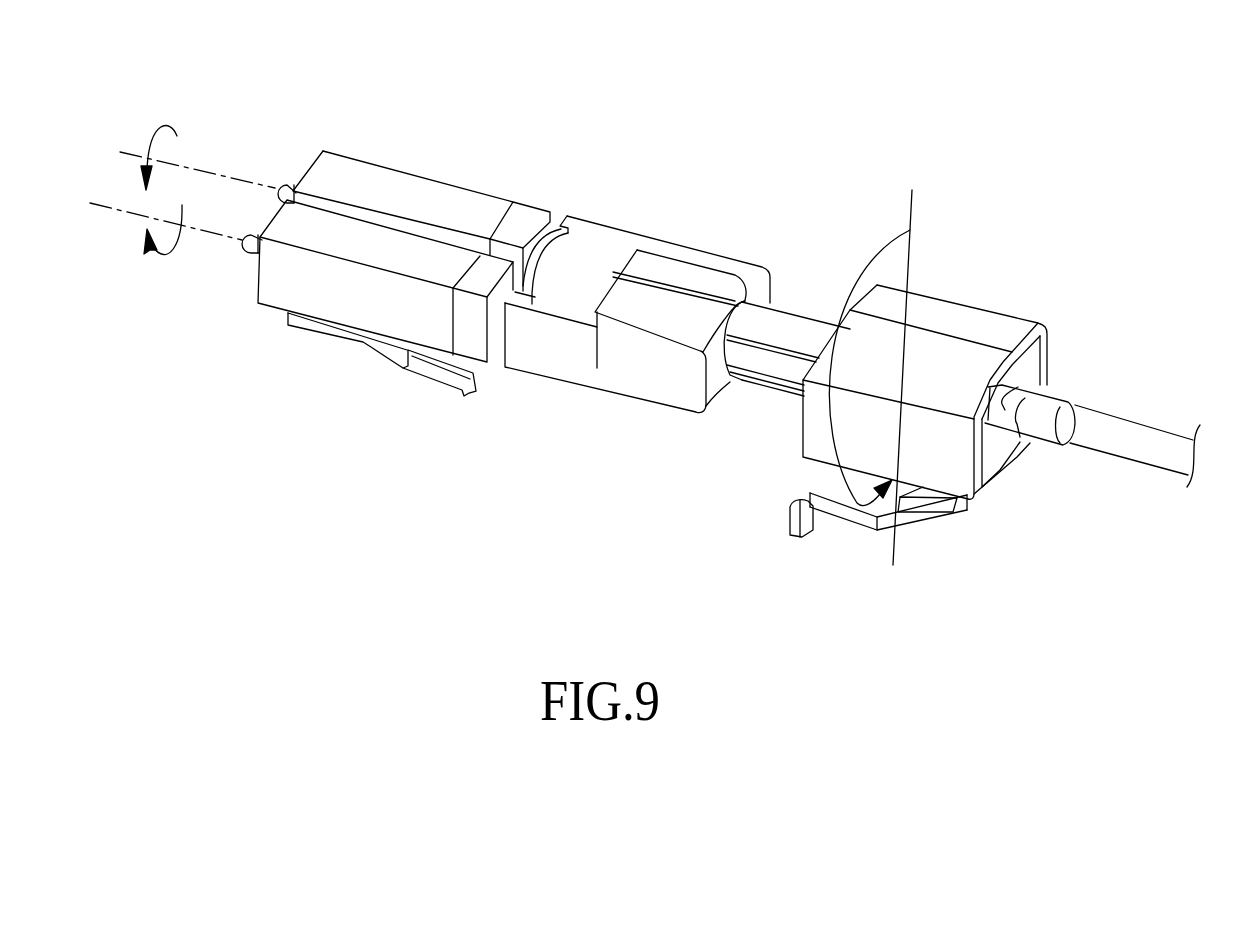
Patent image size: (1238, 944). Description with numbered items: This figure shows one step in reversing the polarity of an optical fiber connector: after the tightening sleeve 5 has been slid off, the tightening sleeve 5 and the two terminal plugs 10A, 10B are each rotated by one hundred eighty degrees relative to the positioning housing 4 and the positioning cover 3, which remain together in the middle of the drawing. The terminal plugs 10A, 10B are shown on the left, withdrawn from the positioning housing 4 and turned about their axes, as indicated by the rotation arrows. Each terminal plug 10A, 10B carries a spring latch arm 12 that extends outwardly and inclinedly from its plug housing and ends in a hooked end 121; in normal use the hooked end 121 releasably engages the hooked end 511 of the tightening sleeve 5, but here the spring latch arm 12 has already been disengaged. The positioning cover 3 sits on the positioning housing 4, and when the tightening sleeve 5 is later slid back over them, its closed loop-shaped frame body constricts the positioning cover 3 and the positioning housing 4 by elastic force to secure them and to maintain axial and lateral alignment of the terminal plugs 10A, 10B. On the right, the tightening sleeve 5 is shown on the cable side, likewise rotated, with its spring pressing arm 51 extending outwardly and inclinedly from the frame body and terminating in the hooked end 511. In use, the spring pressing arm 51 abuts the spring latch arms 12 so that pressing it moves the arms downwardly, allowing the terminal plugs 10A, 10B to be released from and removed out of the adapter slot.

The terminal plug 10A is at (352, 167).
The terminal plug 10B is at (270, 290).
The spring latch arm 12 is at (387, 353).
The hooked end 121 is at (465, 397).
The positioning cover 3 is at (597, 230).
The positioning housing 4 is at (703, 257).
The tightening sleeve 5 is at (838, 555).
The hooked end 511 is at (788, 517).
The spring pressing arm 51 is at (933, 528).